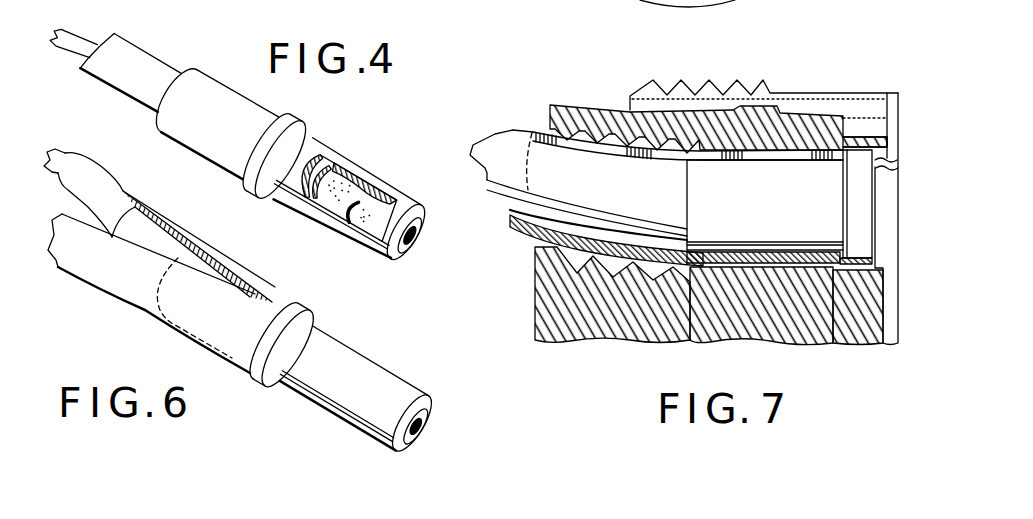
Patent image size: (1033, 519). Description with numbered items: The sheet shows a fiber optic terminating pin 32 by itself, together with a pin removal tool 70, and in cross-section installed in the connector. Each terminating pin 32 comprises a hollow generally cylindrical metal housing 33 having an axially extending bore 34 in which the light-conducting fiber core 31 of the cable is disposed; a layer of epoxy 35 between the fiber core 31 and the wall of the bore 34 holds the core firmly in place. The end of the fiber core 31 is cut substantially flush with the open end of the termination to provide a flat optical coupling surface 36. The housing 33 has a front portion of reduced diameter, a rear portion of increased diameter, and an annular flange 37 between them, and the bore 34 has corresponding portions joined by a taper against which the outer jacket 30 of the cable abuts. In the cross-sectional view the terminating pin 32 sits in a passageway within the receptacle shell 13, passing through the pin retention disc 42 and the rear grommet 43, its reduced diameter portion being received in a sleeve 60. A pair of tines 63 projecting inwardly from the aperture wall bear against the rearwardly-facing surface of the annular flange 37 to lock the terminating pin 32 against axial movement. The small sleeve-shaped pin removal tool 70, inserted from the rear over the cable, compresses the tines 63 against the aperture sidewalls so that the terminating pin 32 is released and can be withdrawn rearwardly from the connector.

In FIG. 7, the receptacle shell 13 is at (853, 107).
In FIG. 4, the outer jacket 30 is at (130, 53).
In FIG. 6, the outer jacket 30 is at (94, 181).
In FIG. 7, the outer jacket 30 is at (517, 131).
In FIG. 4, the fiber core 31 is at (337, 190).
In FIG. 4, the terminating pin 32 is at (223, 82).
In FIG. 6, the terminating pin 32 is at (363, 370).
In FIG. 7, the terminating pin 32 is at (743, 183).
In FIG. 4, the housing 33 is at (403, 200).
In FIG. 4, the bore 34 is at (343, 238).
In FIG. 4, the epoxy 35 is at (332, 202).
In FIG. 4, the optical coupling surface 36 is at (418, 240).
In FIG. 6, the optical coupling surface 36 is at (433, 425).
In FIG. 4, the annular flange 37 is at (273, 200).
In FIG. 6, the annular flange 37 is at (279, 389).
In FIG. 7, the annular flange 37 is at (853, 211).
In FIG. 7, the pin retention disc 42 is at (760, 330).
In FIG. 7, the rear grommet 43 is at (613, 320).
In FIG. 7, the sleeve 60 is at (889, 157).
In FIG. 7, the tines 63 is at (827, 143).
In FIG. 6, the pin removal tool 70 is at (130, 297).
In FIG. 7, the pin removal tool 70 is at (622, 163).